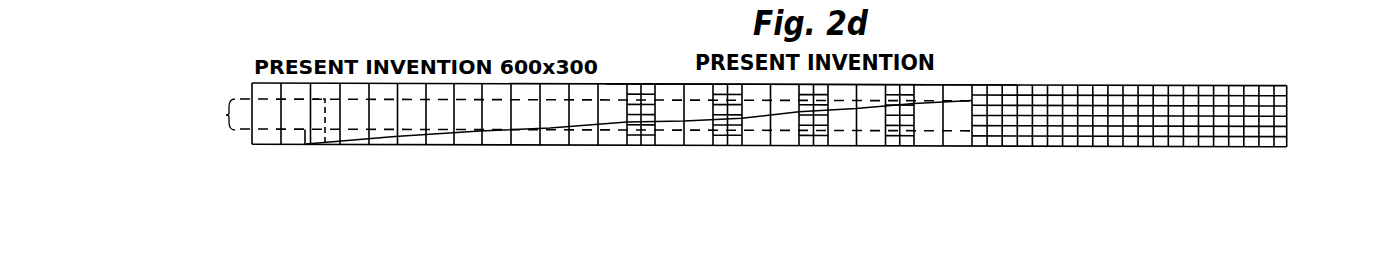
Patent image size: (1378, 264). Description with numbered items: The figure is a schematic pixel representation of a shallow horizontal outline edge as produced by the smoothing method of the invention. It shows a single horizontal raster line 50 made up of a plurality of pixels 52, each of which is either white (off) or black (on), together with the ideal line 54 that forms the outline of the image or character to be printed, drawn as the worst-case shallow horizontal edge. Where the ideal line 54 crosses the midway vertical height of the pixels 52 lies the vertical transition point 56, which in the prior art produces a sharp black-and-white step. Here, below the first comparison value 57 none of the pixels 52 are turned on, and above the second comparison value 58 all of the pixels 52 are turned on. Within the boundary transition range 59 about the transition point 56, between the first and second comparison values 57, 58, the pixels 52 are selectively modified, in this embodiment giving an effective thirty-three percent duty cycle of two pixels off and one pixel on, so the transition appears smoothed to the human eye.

The raster line 50 is at (1287, 102).
The pixels 52 is at (606, 84).
The ideal line 54 is at (662, 124).
The vertical transition point 56 is at (765, 147).
The first comparison value 57 is at (305, 146).
The second comparison value 58 is at (328, 146).
The boundary transition range 59 is at (582, 115).